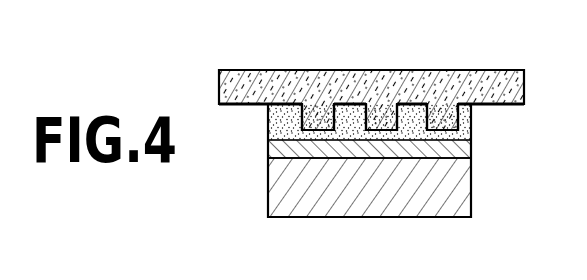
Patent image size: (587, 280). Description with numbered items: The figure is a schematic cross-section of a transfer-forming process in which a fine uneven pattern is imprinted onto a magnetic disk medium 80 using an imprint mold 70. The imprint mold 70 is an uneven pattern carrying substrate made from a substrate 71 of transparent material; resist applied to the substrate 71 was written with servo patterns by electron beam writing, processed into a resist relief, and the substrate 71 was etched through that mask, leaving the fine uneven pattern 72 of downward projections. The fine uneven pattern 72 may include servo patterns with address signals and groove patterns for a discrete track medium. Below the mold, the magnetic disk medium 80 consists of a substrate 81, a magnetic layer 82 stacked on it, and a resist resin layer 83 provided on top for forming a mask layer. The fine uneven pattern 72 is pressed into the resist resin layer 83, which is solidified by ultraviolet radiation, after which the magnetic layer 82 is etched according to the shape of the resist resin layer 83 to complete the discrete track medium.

The imprint mold 70 is at (372, 76).
The substrate 71 is at (488, 75).
The fine uneven pattern 72 is at (447, 118).
The magnetic disk medium 80 is at (346, 188).
The substrate 81 is at (425, 215).
The magnetic layer 82 is at (278, 150).
The resist resin layer 83 is at (283, 116).